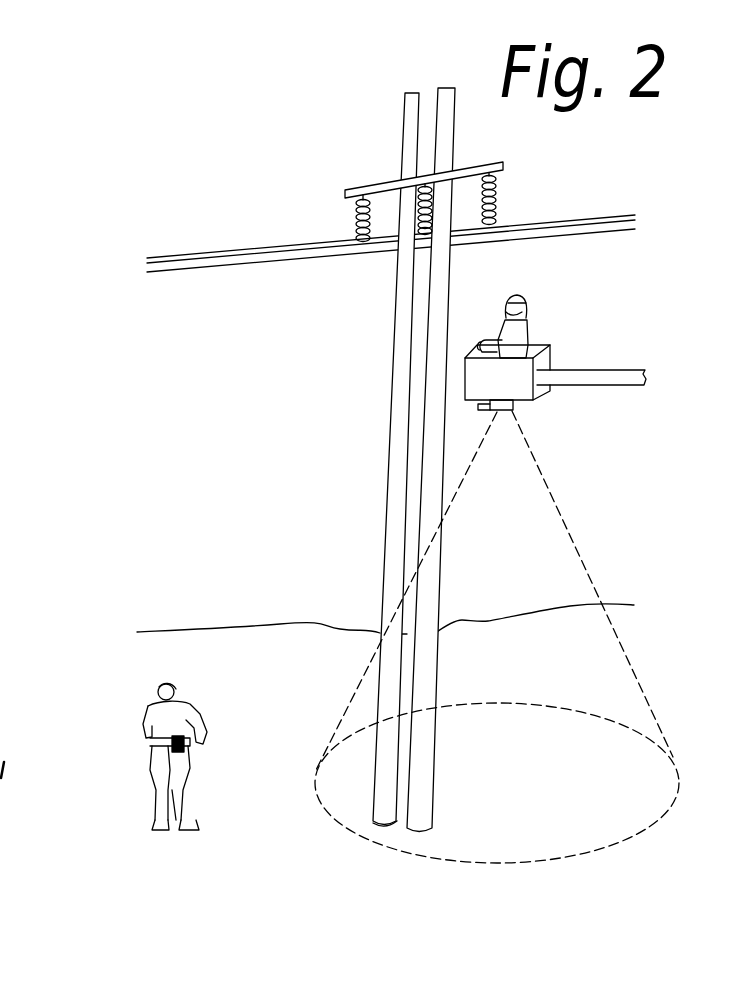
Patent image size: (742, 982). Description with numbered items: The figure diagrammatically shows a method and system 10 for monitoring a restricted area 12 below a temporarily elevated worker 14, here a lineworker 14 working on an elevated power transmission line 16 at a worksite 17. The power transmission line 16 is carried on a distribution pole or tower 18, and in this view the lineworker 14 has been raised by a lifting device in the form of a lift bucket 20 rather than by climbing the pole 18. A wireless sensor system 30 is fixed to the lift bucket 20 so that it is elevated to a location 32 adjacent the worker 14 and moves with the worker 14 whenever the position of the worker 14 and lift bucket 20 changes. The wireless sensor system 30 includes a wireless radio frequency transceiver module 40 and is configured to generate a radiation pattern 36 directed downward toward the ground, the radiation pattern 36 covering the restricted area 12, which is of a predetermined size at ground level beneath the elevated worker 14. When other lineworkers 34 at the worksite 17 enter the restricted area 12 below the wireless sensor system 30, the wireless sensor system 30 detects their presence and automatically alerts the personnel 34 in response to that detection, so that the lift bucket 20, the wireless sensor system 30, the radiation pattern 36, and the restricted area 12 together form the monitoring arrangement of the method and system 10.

The method and system 10 is at (242, 440).
The restricted area 12 is at (370, 843).
The lineworker 14 is at (528, 331).
The power transmission line 16 is at (241, 263).
The worksite 17 is at (279, 657).
The distribution pole or tower 18 is at (396, 290).
The lift bucket 20 is at (554, 360).
The wireless sensor system 30 is at (516, 406).
The location adjacent the worker 32 is at (477, 408).
The other lineworkers 34 is at (141, 722).
The radiation pattern 36 is at (673, 755).
The wireless radio frequency transceiver module 40 is at (514, 413).